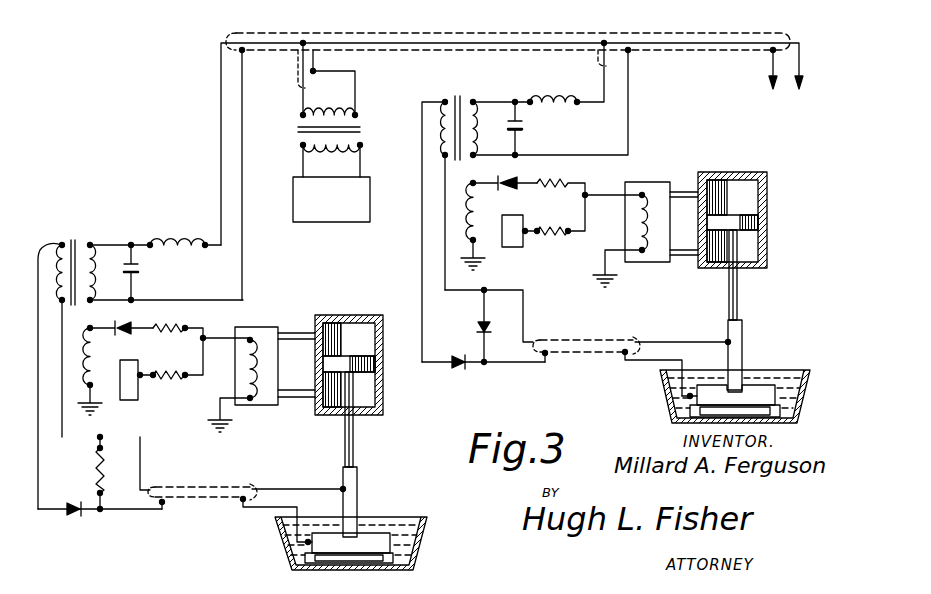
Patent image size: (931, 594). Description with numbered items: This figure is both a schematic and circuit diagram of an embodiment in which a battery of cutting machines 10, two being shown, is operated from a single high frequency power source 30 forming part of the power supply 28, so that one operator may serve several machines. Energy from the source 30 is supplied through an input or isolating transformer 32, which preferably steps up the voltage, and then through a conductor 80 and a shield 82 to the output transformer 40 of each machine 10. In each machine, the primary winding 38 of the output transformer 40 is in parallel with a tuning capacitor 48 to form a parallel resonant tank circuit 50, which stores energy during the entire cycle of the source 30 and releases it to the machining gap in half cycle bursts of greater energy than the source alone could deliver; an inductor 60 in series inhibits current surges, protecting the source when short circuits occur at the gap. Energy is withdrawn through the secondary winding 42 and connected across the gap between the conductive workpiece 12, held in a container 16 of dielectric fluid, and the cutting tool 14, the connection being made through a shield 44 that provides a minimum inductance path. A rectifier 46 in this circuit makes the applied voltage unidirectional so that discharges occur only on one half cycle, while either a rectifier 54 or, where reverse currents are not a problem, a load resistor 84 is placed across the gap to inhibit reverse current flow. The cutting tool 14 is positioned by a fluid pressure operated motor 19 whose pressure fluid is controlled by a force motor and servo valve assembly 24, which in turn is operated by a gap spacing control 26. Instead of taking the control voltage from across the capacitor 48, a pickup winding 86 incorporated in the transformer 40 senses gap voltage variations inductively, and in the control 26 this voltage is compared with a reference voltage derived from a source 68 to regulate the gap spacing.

The cutting machine 10 is at (744, 325).
The workpiece 12 is at (776, 382).
The cutting tool 14 is at (742, 358).
The container 16 is at (664, 406).
The fluid pressure operated motor 19 is at (772, 200).
The force motor and servo valve assembly 24 is at (662, 183).
The gap spacing control 26 is at (553, 245).
The power supply 28 is at (640, 128).
The high frequency power source 30 is at (318, 223).
The input or isolating transformer 32 is at (298, 130).
The primary winding 38 is at (476, 100).
The output transformer 40 is at (457, 94).
The secondary winding 42 is at (440, 130).
The shield 44 is at (582, 340).
The rectifier 46 is at (463, 370).
The tuning capacitor 48 is at (522, 124).
The tank circuit 50 is at (505, 98).
The rectifier 54 is at (480, 326).
The inductor 60 is at (560, 98).
The reference voltage source 68 is at (530, 240).
The conductor 80 is at (368, 43).
The shield 82 is at (498, 24).
The load resistor 84 is at (97, 482).
The pickup winding 86 is at (464, 194).